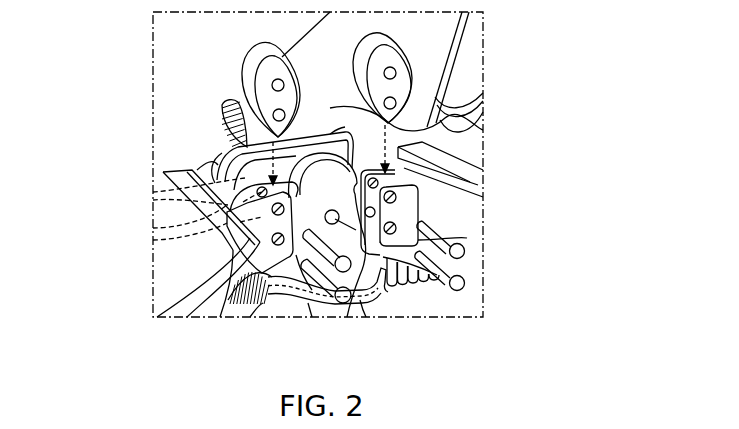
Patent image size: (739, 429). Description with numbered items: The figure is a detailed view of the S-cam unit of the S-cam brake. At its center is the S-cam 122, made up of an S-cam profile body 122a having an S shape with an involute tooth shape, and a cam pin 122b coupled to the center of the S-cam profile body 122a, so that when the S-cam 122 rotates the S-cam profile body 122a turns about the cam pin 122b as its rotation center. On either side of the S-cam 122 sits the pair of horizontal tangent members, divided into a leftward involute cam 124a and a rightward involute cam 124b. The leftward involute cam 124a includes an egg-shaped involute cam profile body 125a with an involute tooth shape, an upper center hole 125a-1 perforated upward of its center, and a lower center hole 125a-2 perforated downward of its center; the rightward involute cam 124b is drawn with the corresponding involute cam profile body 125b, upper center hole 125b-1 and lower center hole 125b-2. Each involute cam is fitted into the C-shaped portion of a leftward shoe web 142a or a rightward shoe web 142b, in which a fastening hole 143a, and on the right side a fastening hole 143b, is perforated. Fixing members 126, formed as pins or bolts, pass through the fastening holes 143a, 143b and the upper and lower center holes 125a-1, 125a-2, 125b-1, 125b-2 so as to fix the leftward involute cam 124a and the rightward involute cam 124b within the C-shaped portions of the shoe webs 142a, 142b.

The leftward involute cam 124a is at (79, 50).
The involute cam profile body 125a is at (248, 68).
The upper center hole 125a-1 is at (272, 87).
The lower center hole 125a-2 is at (273, 117).
The rightward involute cam 124b is at (562, 33).
The second boss 125b is at (393, 53).
The first hole of second boss 125b-1 is at (397, 75).
The second hole of second boss 125b-2 is at (397, 107).
The leftward shoe web 142a is at (260, 229).
The fastening hole 143a is at (257, 192).
The rightward shoe web 142b is at (467, 238).
The second mounting plate 143b is at (376, 182).
The fixing member 126 is at (461, 255).
The S-cam 122 is at (452, 359).
The S-cam profile body 122a is at (350, 302).
The cam pin 122b is at (413, 296).